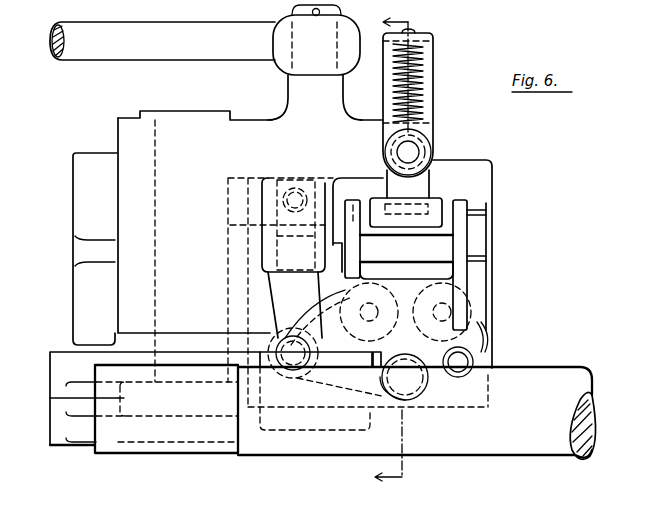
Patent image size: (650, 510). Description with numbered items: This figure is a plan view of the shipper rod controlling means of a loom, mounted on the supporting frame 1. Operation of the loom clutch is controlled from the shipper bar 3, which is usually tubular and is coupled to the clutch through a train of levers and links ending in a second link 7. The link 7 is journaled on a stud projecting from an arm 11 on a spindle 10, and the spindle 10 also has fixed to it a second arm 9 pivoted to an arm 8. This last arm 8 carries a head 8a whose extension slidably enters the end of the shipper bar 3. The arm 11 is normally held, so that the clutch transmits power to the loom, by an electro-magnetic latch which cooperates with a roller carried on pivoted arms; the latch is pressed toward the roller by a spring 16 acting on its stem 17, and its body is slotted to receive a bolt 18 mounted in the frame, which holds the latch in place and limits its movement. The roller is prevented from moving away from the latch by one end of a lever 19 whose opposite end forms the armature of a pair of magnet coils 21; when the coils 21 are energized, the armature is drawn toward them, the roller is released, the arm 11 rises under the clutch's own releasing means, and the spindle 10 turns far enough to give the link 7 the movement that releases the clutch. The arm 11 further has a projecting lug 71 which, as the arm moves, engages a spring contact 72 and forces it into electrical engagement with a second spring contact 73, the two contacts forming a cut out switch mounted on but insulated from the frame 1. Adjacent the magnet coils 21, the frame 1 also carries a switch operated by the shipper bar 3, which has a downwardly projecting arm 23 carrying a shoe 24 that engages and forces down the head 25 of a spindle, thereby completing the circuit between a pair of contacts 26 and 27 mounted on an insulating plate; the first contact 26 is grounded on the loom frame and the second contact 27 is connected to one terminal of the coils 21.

The supporting frame 1 is at (82, 294).
The shipper bar 3 is at (534, 380).
The second link 7 is at (173, 50).
The arm 8 is at (81, 436).
The head 8a is at (172, 447).
The second arm 9 is at (55, 362).
The spindle 10 is at (167, 203).
The arm 11 is at (250, 132).
The spring 16 is at (434, 62).
The stem 17 is at (415, 33).
The bolt 18 is at (418, 152).
The lever 19 is at (460, 277).
The magnet coils 21 is at (426, 303).
The downwardly projecting arm 23 is at (321, 343).
The shoe 24 is at (378, 357).
The head 25 is at (455, 349).
The contact 26 is at (427, 389).
The contact 27 is at (315, 398).
The projecting lug 71 is at (293, 225).
The spring contact 72 is at (265, 225).
The second spring contact 73 is at (278, 301).